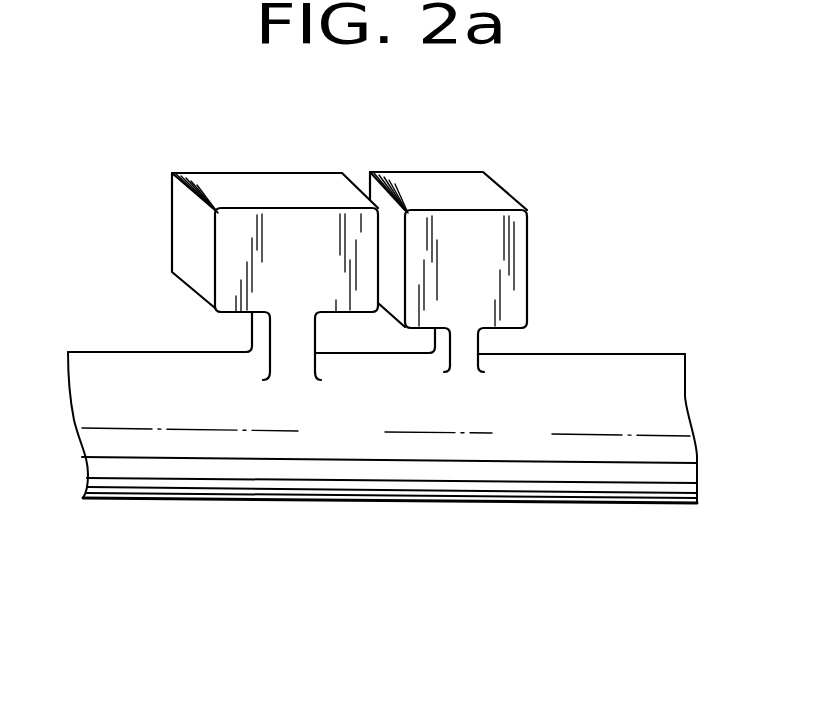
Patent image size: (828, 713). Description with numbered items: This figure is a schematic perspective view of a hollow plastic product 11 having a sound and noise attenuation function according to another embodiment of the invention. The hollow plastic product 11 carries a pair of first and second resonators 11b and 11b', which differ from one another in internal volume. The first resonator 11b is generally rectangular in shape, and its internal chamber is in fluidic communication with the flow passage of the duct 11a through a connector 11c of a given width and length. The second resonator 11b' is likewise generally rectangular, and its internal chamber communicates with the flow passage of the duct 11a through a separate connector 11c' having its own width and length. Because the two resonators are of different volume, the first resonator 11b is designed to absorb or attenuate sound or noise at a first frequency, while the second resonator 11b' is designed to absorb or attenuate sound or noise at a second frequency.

The hollow plastic product 11 is at (134, 365).
The duct 11a is at (382, 478).
The first resonator 11b is at (275, 216).
The second resonator 11b' is at (448, 224).
The connector 11c is at (307, 371).
The connector 11c' is at (494, 379).